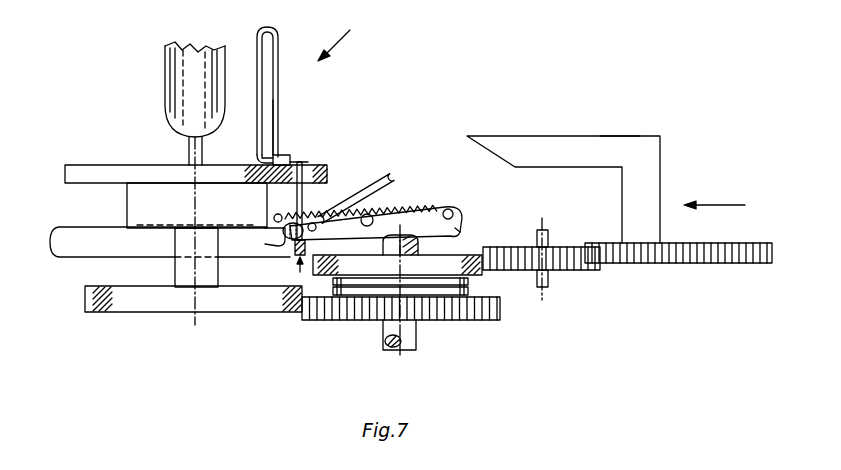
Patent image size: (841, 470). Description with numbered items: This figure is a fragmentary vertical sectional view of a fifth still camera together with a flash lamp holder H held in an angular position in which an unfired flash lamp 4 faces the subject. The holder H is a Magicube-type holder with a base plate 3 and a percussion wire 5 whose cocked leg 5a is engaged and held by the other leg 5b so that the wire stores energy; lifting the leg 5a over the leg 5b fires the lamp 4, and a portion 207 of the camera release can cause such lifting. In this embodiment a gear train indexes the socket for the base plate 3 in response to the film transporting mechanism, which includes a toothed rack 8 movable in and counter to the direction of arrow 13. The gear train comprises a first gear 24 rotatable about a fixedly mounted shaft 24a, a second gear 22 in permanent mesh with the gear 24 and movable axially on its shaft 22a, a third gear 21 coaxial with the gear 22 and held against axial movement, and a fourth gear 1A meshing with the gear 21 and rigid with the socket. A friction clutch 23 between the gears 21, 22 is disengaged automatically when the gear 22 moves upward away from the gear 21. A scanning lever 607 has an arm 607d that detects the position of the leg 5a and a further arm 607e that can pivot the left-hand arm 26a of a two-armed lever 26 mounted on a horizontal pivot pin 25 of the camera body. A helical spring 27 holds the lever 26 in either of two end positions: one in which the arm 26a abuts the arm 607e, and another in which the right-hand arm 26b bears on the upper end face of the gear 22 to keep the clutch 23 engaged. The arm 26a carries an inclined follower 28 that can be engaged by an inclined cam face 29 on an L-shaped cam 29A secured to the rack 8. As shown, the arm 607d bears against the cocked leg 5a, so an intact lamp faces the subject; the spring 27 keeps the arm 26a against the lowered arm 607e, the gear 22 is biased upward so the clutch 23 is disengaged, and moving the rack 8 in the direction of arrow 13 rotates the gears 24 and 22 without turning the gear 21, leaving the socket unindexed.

The fourth gear 1A is at (262, 304).
The base plate 3 is at (93, 175).
The flash lamp 4 is at (186, 74).
The percussion wire 5 is at (266, 29).
The leg 5a is at (308, 160).
The leg 5b is at (281, 100).
The holder H is at (342, 34).
The toothed rack 8 is at (686, 256).
The arrow 13 is at (715, 204).
The third gear 21 is at (352, 320).
The second gear 22 is at (448, 262).
The shaft 22a is at (410, 334).
The friction clutch 23 is at (472, 285).
The first gear 24 is at (570, 268).
The shaft 24a is at (548, 243).
The pivot pin 25 is at (376, 219).
The two-armed lever 26 is at (443, 208).
The left-hand arm 26a is at (290, 238).
The right-hand arm 26b is at (462, 228).
The helical spring 27 is at (316, 223).
The inclined projection or follower 28 is at (375, 177).
The inclined cam face 29 is at (492, 147).
The L-shaped cam 29A is at (563, 140).
The portion of the camera release 207 is at (130, 203).
The scanning lever 607 is at (90, 248).
The arm 607d is at (285, 250).
The further arm 607e is at (272, 205).